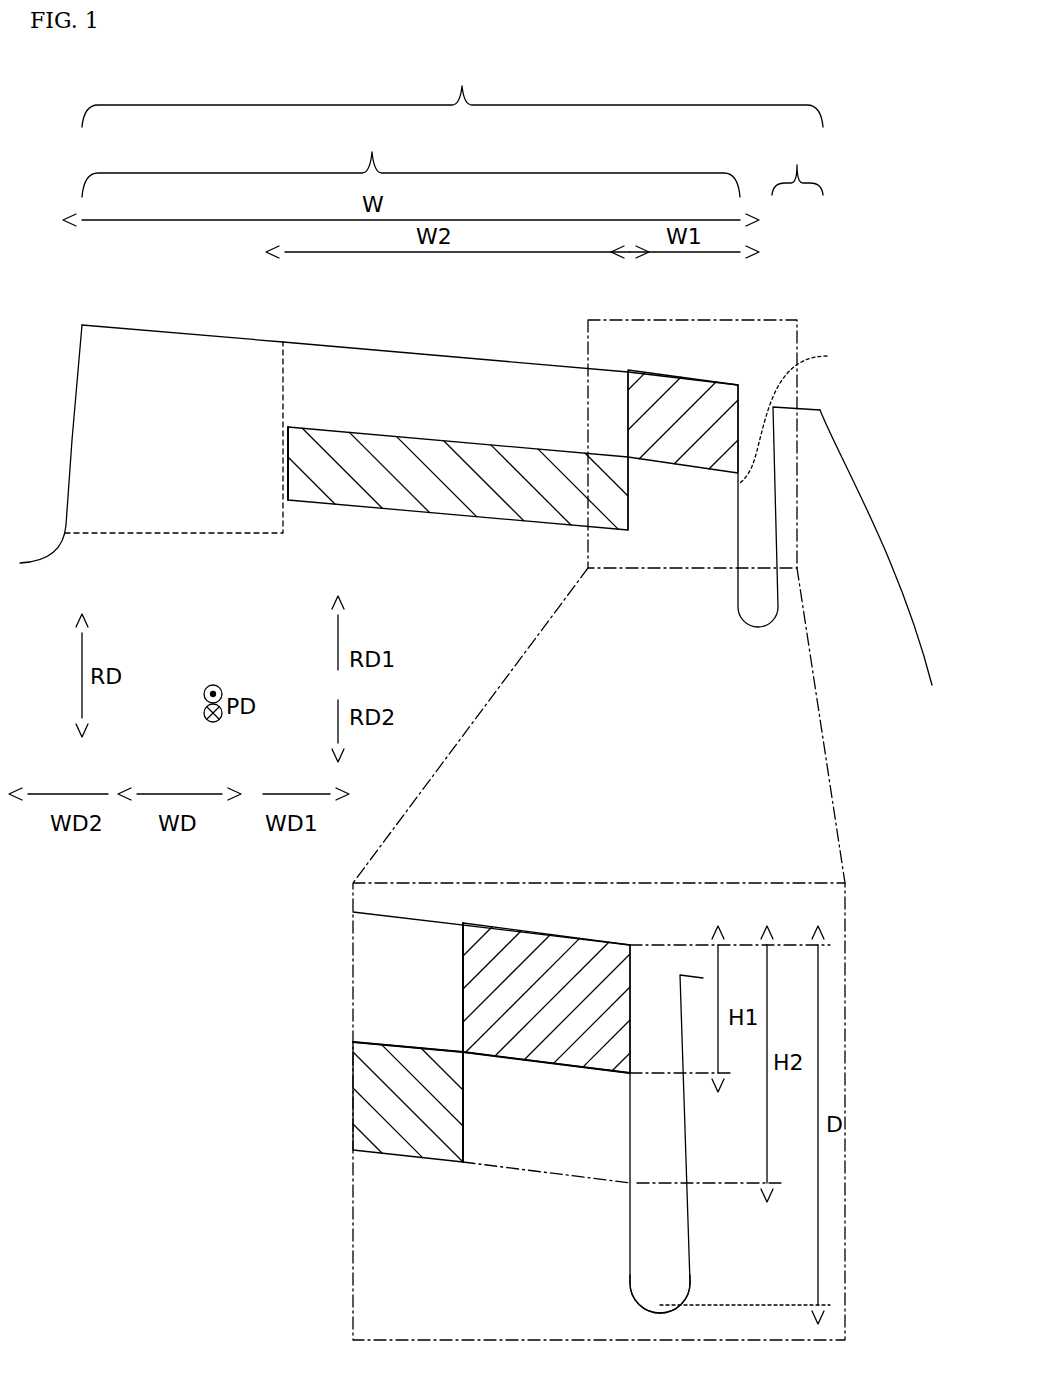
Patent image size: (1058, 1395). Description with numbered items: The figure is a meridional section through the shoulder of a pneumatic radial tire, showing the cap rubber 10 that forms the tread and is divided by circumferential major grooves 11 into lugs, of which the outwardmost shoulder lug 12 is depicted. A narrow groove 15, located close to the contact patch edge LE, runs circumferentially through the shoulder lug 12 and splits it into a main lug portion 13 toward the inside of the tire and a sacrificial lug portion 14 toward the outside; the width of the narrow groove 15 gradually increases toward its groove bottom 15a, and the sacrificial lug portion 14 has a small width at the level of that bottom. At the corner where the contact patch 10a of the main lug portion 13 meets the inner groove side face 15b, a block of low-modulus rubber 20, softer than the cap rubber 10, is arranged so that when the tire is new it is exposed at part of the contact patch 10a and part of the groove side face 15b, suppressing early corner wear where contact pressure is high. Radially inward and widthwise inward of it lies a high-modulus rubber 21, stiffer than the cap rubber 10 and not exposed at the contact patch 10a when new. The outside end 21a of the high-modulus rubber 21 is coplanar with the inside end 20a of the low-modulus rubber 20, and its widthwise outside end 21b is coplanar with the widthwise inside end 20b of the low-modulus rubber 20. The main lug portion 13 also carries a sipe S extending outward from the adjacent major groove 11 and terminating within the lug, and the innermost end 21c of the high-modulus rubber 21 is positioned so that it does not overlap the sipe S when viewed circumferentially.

The cap rubber 10 is at (315, 357).
The contact patch 10a is at (500, 350).
The major groove 11 is at (33, 318).
The shoulder lug 12 is at (452, 91).
The main lug portion 13 is at (411, 159).
The sacrificial lug portion 14 is at (797, 163).
The narrow groove 15 is at (753, 392).
The groove bottom 15a is at (660, 1305).
The groove side face 15b is at (640, 1147).
The low-modulus rubber 20 is at (685, 460).
The inside end of low-modulus rubber 20a is at (537, 1063).
The inside end of low-modulus rubber in tire width direction 20b is at (463, 970).
The high-modulus rubber 21 is at (435, 495).
The outside end of high-modulus rubber 21a is at (432, 1048).
The outside end of high-modulus rubber in tire width direction 21b is at (465, 1133).
The innermost end of high-modulus rubber 21c is at (286, 442).
The sipe S is at (205, 535).
The contact patch edge LE is at (820, 410).